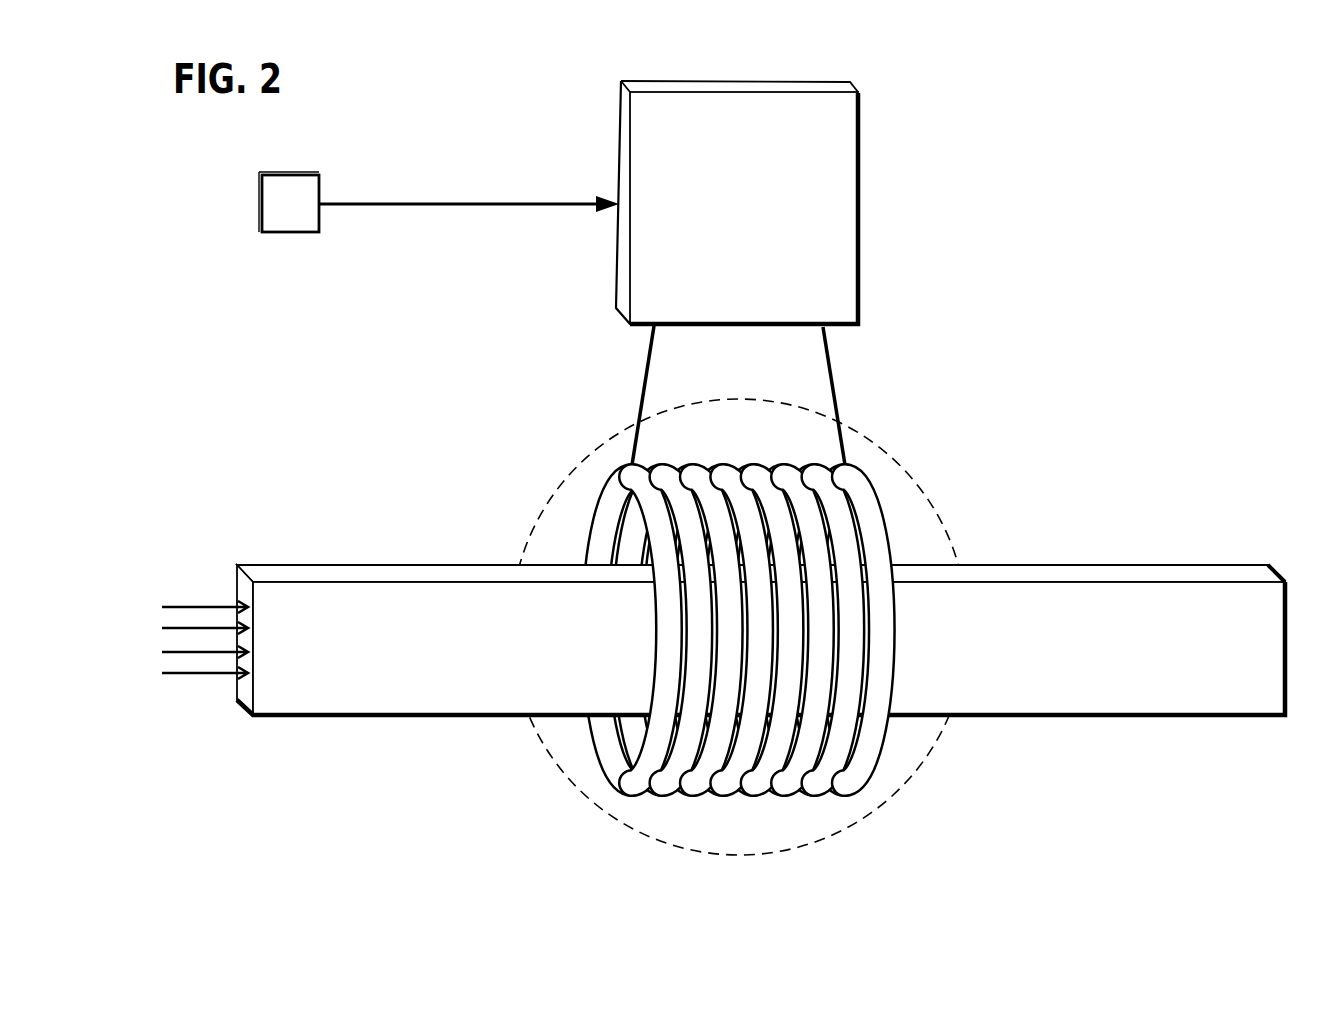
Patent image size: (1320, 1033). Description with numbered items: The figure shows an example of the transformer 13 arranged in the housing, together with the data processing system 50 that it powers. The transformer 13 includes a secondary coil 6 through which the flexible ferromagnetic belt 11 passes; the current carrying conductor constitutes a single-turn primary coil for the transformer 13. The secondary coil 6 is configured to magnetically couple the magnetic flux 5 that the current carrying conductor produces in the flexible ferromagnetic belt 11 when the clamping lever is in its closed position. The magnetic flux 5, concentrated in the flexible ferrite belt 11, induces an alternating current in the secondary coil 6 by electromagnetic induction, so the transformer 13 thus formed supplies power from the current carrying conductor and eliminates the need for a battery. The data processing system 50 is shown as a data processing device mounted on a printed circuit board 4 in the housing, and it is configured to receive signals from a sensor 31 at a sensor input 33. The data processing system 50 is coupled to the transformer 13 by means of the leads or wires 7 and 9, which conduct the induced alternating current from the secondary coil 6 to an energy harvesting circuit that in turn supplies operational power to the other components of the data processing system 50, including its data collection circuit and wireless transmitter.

The data processing system 50 is at (615, 162).
The sensor 31 is at (291, 219).
The sensor input 33 is at (605, 223).
The printed circuit board 4 is at (858, 232).
The lead 7 is at (622, 380).
The lead 9 is at (843, 387).
The secondary coil 6 is at (863, 528).
The flexible ferromagnetic belt 11 is at (430, 560).
The magnetic flux 5 is at (223, 688).
The transformer 13 is at (933, 753).